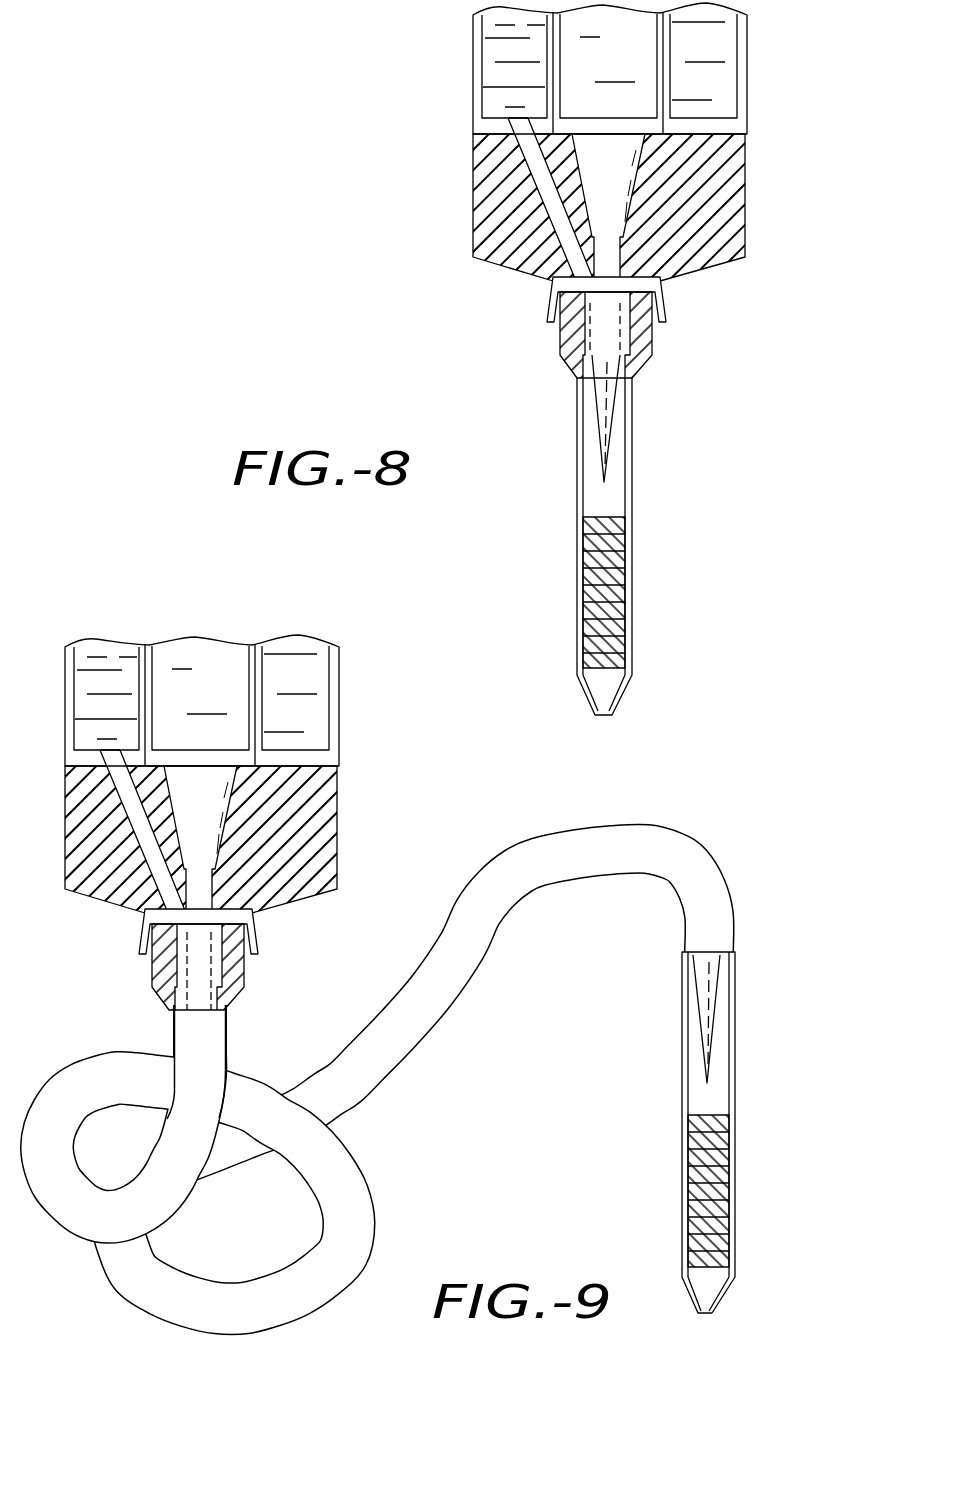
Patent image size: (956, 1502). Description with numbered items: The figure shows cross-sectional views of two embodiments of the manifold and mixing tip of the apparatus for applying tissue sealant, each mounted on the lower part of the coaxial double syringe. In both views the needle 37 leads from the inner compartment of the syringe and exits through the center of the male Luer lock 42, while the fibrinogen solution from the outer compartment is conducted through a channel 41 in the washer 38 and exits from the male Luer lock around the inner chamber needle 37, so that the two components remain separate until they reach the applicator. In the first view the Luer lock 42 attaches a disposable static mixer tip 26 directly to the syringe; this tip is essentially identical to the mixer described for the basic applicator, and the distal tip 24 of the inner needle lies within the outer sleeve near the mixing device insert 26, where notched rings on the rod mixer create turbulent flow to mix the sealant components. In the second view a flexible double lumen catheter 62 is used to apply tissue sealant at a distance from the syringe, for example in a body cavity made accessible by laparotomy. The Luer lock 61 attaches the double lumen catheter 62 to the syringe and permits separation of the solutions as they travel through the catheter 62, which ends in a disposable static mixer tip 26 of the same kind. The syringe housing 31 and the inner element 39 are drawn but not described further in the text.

In FIG. 9, the distal tip 24 is at (738, 1103).
In FIG. 8, the static mixer device 26 is at (637, 614).
In FIG. 9, the static mixer device 26 is at (748, 1214).
In FIG. 8, the multi-compartment container 31 is at (770, 72).
In FIG. 9, the multi-compartment container 31 is at (358, 707).
In FIG. 8, the needle 37 is at (642, 194).
In FIG. 8, the washer 38 is at (722, 257).
In FIG. 9, the washer 38 is at (314, 887).
In FIG. 8, the spike 39 is at (614, 448).
In FIG. 8, the channel 41 is at (548, 210).
In FIG. 8, the male Luer lock 42 is at (677, 338).
In FIG. 9, the male Luer lock 42 is at (282, 936).
In FIG. 9, the Luer lock 61 is at (268, 979).
In FIG. 9, the flexible double lumen catheter 62 is at (488, 849).